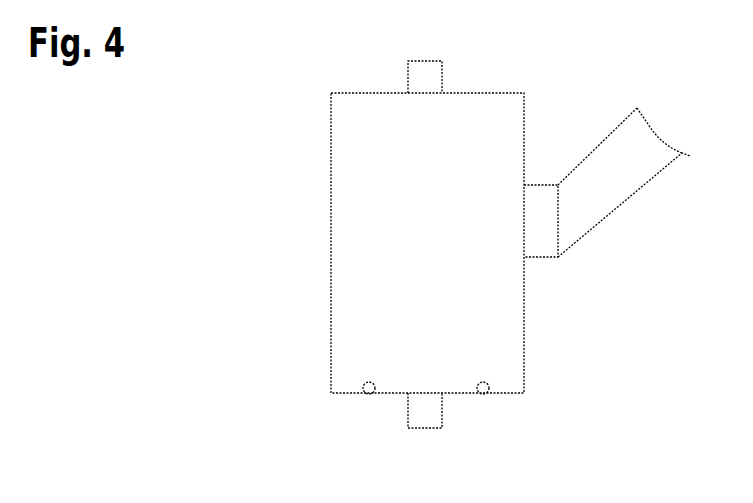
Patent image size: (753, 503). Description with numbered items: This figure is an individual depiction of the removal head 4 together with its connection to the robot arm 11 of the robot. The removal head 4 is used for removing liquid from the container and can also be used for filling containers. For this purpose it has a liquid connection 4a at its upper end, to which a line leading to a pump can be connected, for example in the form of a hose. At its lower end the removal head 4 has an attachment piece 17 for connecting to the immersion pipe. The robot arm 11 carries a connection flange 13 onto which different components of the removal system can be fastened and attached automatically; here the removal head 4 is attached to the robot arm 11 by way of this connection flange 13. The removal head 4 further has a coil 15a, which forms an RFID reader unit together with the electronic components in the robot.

The removal head 4 is at (331, 243).
The liquid connection 4a is at (424, 79).
The robot arm 11 is at (622, 193).
The connection flange 13 is at (540, 183).
The coil 15a is at (373, 397).
The attachment piece 17 is at (425, 412).